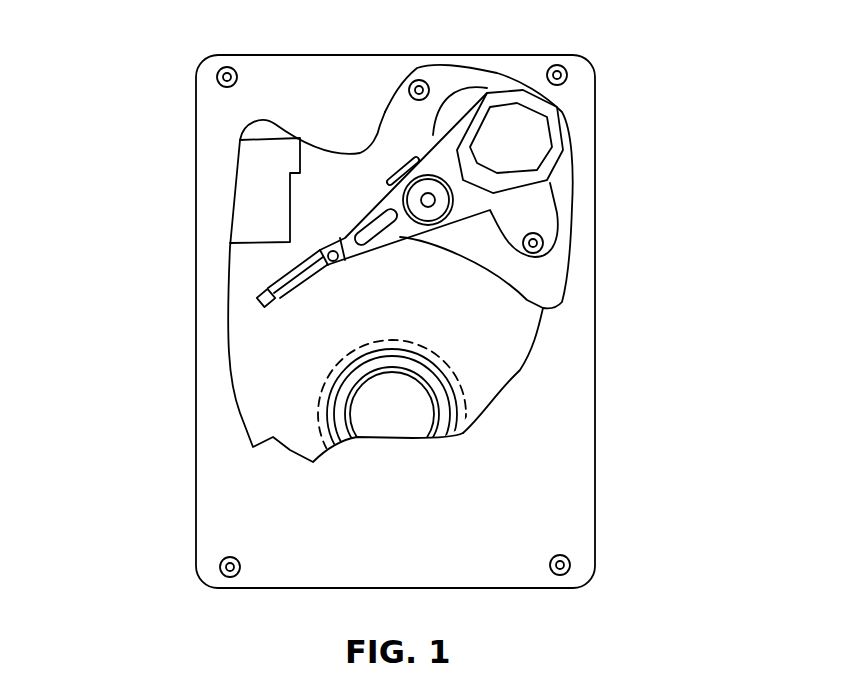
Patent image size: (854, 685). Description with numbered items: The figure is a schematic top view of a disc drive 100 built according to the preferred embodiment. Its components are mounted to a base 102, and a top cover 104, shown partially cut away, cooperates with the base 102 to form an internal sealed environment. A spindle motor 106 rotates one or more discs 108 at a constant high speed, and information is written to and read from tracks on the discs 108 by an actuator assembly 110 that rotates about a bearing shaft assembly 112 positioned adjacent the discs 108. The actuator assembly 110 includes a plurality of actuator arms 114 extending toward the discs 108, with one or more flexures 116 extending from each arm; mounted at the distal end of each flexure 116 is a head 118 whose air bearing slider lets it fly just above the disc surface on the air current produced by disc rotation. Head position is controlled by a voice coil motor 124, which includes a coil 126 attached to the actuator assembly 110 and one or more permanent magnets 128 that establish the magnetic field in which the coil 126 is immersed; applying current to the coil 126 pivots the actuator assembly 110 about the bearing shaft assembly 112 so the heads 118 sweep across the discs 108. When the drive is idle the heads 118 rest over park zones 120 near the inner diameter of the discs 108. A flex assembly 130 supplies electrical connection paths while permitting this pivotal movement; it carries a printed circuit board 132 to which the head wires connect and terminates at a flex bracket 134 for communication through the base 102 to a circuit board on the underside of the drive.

The disc drive 100 is at (170, 44).
The base 102 is at (237, 252).
The top cover 104 is at (240, 495).
The spindle motor 106 is at (390, 415).
The disc 108 is at (497, 363).
The actuator assembly 110 is at (405, 230).
The bearing shaft assembly 112 is at (428, 200).
The actuator arm 114 is at (380, 243).
The flexure 116 is at (285, 287).
The head 118 is at (268, 292).
The park zone 120 is at (318, 417).
The voice coil motor 124 is at (470, 55).
The coil 126 is at (560, 143).
The permanent magnet 128 is at (447, 110).
The flex assembly 130 is at (367, 203).
The printed circuit board 132 is at (407, 167).
The flex bracket 134 is at (253, 183).